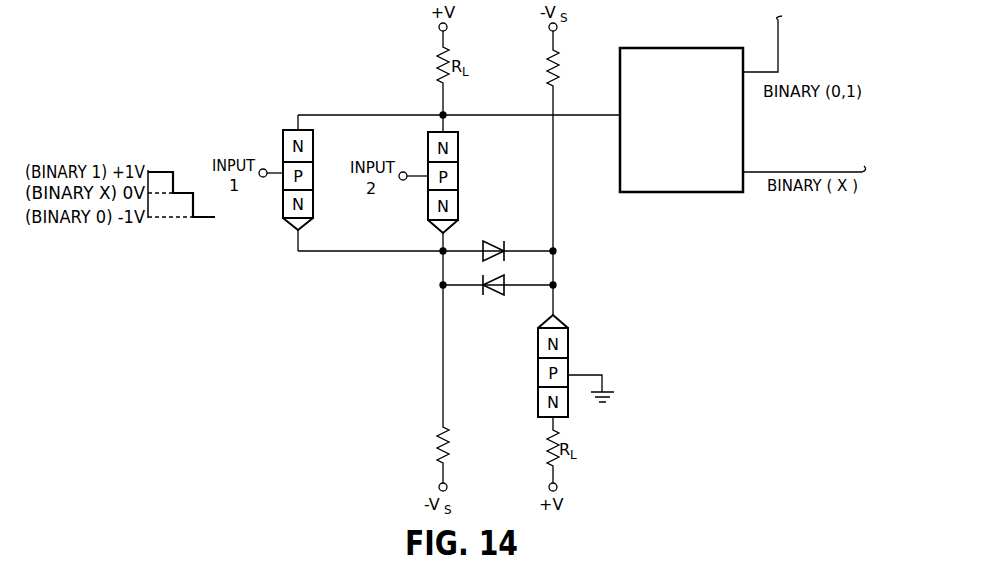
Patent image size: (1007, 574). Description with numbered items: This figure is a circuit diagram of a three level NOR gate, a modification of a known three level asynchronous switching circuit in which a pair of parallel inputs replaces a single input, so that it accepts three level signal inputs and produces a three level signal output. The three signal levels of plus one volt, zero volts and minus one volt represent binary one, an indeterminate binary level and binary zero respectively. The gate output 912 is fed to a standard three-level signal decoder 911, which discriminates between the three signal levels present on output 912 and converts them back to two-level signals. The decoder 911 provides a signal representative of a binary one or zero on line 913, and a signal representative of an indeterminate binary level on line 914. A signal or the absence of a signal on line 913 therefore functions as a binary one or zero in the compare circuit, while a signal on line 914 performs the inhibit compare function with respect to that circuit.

The decoder 911 is at (730, 56).
The output 912 is at (509, 118).
The line 913 is at (778, 40).
The line 914 is at (830, 172).